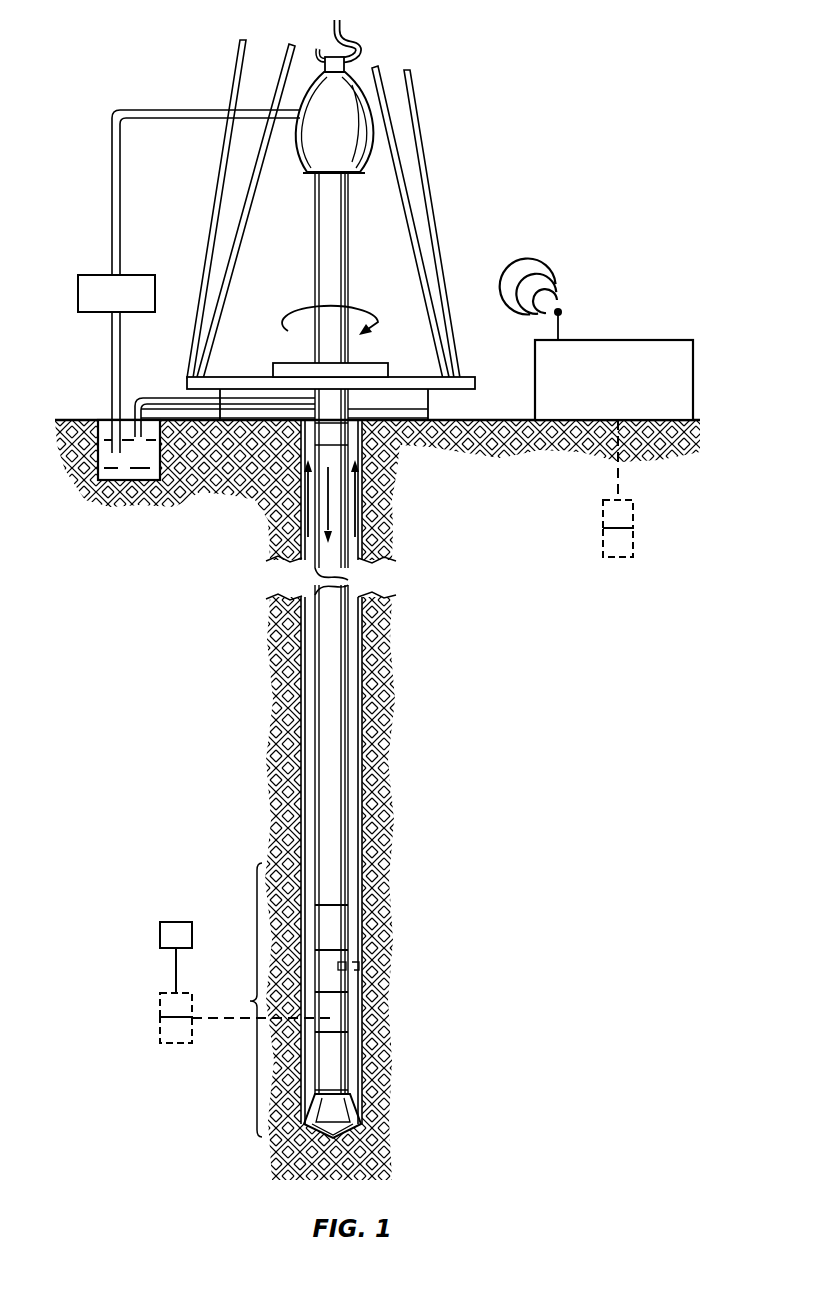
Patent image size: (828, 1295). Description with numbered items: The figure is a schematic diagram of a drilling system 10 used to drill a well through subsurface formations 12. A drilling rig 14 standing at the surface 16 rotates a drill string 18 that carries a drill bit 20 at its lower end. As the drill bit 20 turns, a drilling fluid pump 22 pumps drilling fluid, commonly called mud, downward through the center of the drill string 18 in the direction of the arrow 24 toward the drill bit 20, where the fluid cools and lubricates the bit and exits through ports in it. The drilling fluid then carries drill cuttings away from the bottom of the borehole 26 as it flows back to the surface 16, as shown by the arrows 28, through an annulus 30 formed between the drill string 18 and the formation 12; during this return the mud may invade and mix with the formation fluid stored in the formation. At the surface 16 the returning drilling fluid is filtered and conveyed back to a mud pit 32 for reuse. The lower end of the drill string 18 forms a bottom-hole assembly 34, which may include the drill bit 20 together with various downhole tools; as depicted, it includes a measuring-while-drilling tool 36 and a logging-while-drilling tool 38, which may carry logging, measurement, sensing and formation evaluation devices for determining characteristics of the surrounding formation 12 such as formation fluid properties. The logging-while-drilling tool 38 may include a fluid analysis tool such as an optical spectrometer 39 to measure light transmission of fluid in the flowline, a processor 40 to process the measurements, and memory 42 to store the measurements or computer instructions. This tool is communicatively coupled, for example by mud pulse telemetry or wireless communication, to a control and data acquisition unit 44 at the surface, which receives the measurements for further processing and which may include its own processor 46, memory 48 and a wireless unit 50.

The drilling system 10 is at (492, 60).
The subsurface formations 12 is at (436, 766).
The drilling rig 14 is at (448, 127).
The surface 16 is at (511, 417).
The drill string 18 is at (330, 398).
The drill bit 20 is at (338, 1113).
The drilling fluid pump 22 is at (78, 290).
The arrow 24 is at (323, 524).
The borehole 26 is at (300, 791).
The arrows 28 is at (306, 502).
The annulus 30 is at (355, 410).
The mud pit 32 is at (137, 481).
The bottom-hole assembly 34 is at (249, 1000).
The measuring-while-drilling (MWD) tool 36 is at (338, 930).
The logging-while-drilling (LWD) tool 38 is at (338, 1008).
The optical spectrometer 39 is at (160, 938).
The processor 40 is at (160, 1006).
The memory 42 is at (166, 1044).
The control and data acquisition unit 44 is at (657, 340).
The processor 46 is at (633, 516).
The memory 48 is at (612, 556).
The wireless unit 50 is at (563, 309).